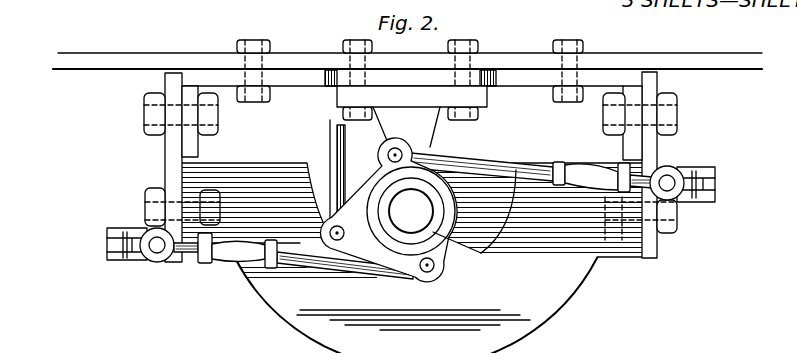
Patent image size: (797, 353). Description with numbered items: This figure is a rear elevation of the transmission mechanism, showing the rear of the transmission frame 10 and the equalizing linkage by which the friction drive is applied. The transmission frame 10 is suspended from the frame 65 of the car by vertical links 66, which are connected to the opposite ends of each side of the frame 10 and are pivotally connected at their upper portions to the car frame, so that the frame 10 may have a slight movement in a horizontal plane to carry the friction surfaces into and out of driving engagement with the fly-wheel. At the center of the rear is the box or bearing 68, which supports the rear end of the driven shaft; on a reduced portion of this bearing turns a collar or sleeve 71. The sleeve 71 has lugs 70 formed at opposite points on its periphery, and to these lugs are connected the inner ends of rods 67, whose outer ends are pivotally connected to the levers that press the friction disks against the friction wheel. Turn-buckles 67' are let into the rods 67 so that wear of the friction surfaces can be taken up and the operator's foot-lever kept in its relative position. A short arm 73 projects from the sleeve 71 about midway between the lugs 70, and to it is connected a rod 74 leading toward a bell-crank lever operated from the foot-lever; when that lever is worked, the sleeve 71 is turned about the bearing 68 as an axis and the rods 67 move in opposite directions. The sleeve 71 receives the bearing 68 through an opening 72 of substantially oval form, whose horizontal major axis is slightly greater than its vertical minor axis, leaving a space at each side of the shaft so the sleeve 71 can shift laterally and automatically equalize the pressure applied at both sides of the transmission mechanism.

The transmission frame 10 is at (182, 175).
The car frame 65 is at (672, 52).
The vertical links 66 is at (172, 143).
The rods 67 is at (411, 225).
The turn-buckles 67' is at (411, 215).
The box or bearing 68 is at (412, 116).
The lugs 70 is at (388, 148).
The collar or sleeve 71 is at (446, 193).
The oval opening 72 is at (481, 253).
The short arm 73 is at (362, 230).
The rod 74 is at (335, 142).